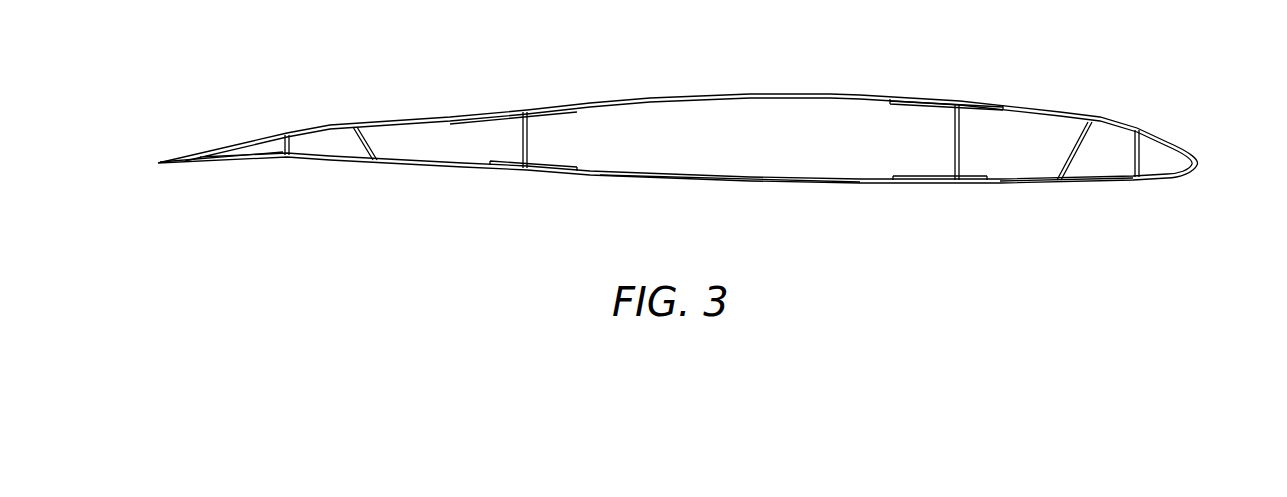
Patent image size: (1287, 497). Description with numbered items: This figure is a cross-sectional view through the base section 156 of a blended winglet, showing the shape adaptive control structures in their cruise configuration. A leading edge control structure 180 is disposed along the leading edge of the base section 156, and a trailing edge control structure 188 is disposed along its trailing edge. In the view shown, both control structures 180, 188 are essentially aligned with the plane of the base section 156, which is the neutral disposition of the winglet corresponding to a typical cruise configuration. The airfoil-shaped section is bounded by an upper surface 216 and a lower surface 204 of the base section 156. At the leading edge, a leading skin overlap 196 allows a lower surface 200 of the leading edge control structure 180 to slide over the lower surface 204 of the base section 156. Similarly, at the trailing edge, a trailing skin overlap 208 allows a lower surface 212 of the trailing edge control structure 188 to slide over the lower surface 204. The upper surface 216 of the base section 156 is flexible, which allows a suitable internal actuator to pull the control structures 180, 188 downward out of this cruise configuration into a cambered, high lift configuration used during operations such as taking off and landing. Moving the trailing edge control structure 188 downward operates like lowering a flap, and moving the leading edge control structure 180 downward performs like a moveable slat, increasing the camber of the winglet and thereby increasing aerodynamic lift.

The base section 156 is at (730, 66).
The trailing edge control structure 188 is at (295, 111).
The leading edge control structure 180 is at (1137, 104).
The upper surface of the base section 216 is at (833, 90).
The lower surface of the trailing edge control structure 212 is at (347, 162).
The trailing skin overlap 208 is at (508, 175).
The lower surface of the base section 204 is at (727, 183).
The leading skin overlap 196 is at (970, 185).
The lower surface of the leading edge control structure 200 is at (1107, 180).